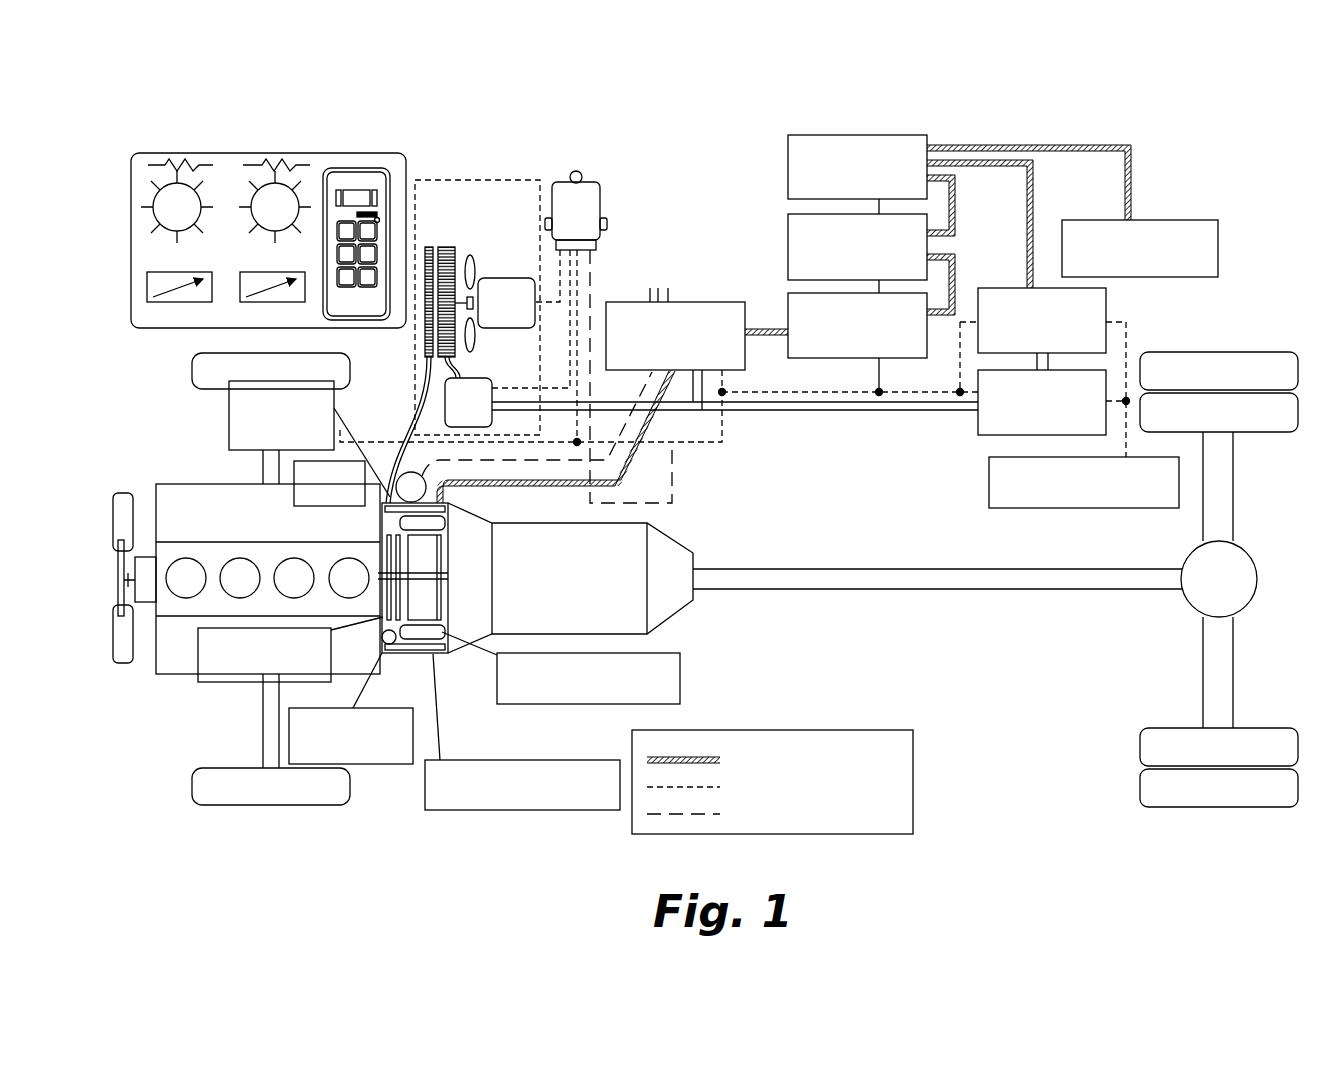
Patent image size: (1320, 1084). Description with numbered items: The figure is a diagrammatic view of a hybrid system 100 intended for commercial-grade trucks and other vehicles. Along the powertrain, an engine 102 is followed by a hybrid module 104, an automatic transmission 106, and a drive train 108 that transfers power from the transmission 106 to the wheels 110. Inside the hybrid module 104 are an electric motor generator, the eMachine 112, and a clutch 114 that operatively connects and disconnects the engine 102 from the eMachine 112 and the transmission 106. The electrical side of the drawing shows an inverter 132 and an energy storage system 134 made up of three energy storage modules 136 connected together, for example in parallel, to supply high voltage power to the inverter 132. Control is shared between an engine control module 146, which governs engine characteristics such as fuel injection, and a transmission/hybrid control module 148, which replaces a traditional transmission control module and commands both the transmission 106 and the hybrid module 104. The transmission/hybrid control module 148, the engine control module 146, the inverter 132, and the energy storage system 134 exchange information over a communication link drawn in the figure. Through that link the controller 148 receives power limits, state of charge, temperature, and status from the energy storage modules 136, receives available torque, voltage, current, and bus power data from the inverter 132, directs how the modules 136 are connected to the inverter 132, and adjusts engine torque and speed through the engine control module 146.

The hybrid system 100 is at (705, 456).
The engine 102 is at (158, 484).
The hybrid module 104 is at (405, 644).
The automatic transmission 106 is at (690, 548).
The drive train 108 is at (960, 590).
The wheels 110 is at (1267, 352).
The eMachine 112 is at (442, 633).
The clutch 114 is at (383, 562).
The inverter 132 is at (700, 302).
The energy storage system 134 is at (859, 235).
The energy storage module 136 is at (895, 134).
The engine control module 146 is at (294, 474).
The transmission/hybrid control module 148 is at (570, 173).